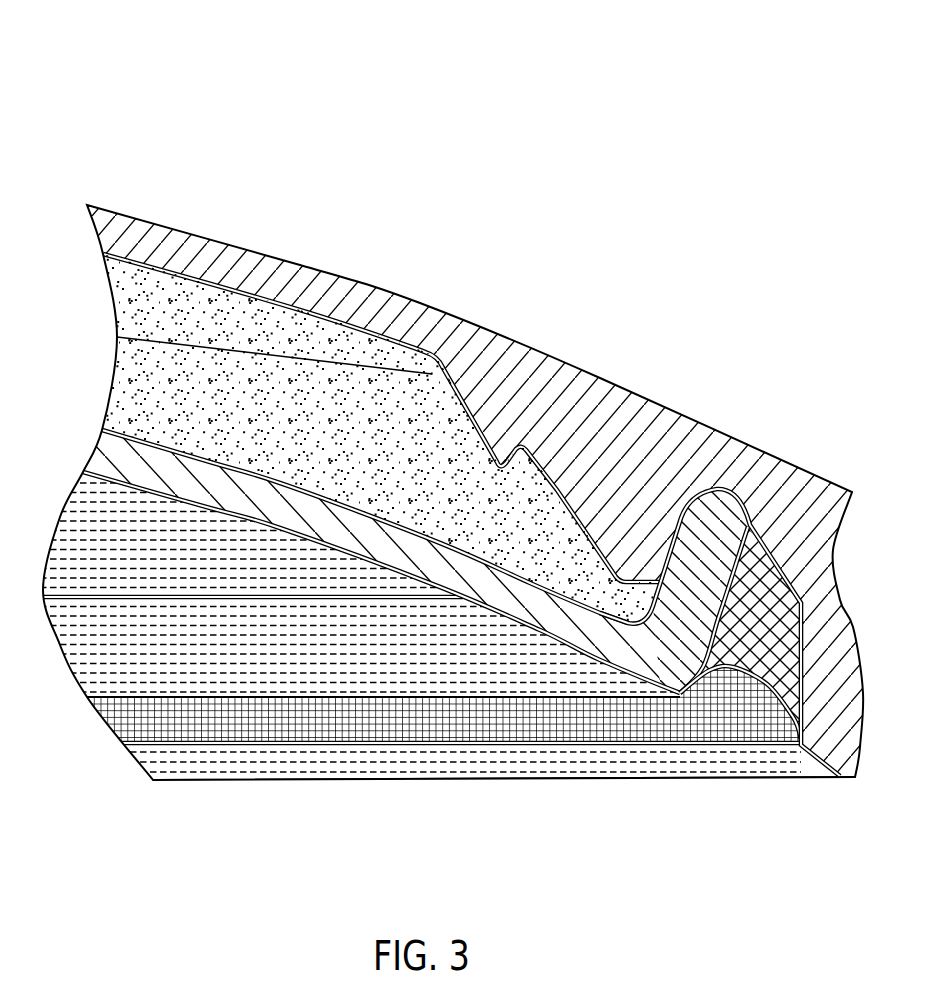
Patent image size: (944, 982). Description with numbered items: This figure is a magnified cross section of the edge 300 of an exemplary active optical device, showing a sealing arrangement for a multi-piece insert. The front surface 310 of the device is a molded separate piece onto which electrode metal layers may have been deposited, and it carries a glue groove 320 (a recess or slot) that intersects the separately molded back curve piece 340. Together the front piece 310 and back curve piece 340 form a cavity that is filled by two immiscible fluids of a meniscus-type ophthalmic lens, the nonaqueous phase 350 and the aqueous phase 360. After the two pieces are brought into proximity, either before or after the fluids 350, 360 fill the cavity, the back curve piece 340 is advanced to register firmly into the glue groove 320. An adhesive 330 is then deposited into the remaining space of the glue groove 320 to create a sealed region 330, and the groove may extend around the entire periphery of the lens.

The edge 300 is at (160, 94).
The front surface 310 is at (603, 373).
The glue groove 320 is at (709, 473).
The adhesive 330 is at (778, 582).
The back curve piece 340 is at (680, 661).
The nonaqueous phase 350 is at (140, 311).
The aqueous phase 360 is at (170, 411).